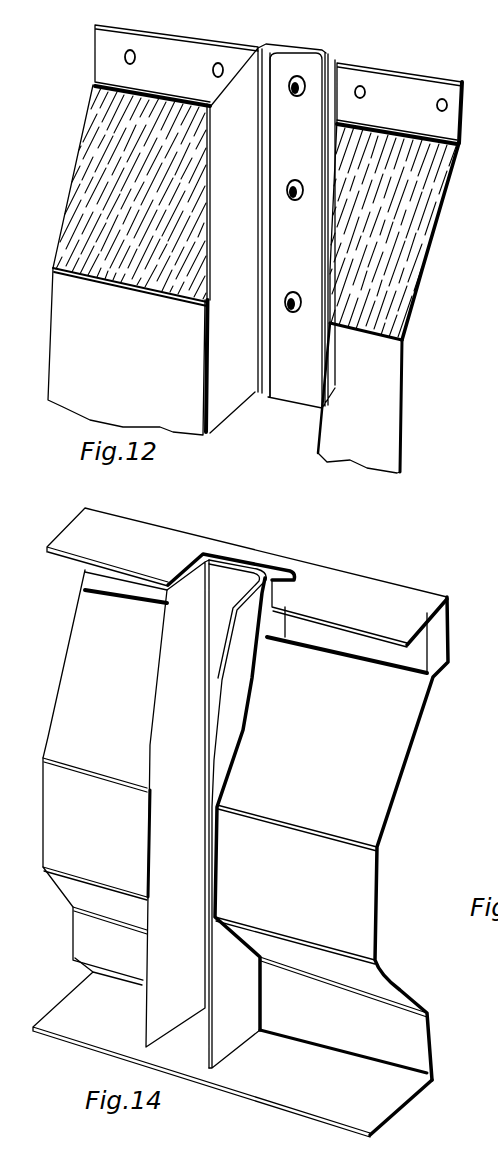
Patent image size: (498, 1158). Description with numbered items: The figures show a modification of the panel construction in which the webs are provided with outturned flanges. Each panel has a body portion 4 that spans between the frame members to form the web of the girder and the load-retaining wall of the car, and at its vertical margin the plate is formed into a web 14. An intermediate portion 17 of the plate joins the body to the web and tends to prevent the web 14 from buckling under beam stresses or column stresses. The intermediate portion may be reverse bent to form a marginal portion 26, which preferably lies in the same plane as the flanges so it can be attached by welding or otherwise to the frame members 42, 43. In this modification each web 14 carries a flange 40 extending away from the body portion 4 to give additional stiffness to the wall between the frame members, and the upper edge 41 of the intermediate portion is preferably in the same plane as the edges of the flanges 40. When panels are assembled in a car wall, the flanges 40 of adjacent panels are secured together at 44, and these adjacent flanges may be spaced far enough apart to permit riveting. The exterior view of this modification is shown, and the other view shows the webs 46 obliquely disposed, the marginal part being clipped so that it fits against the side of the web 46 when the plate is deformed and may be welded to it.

In FIG. 12, the panel body portion 4 is at (128, 351).
In FIG. 14, the panel body portion 4 is at (105, 775).
In FIG. 14, the web 14 is at (180, 693).
In FIG. 12, the intermediate portion 17 is at (155, 162).
In FIG. 14, the intermediate portion 17 is at (331, 829).
In FIG. 12, the marginal portion 26 is at (443, 60).
In FIG. 14, the marginal portion 26 is at (347, 640).
In FIG. 12, the flange 40 is at (306, 51).
In FIG. 12, the upper edge of intermediate portion 41 is at (391, 262).
In FIG. 14, the frame member 42 is at (450, 647).
In FIG. 14, the frame member 43 is at (397, 1113).
In FIG. 12, the securing means 44 is at (290, 201).
In FIG. 12, the obliquely disposed web 46 is at (212, 157).